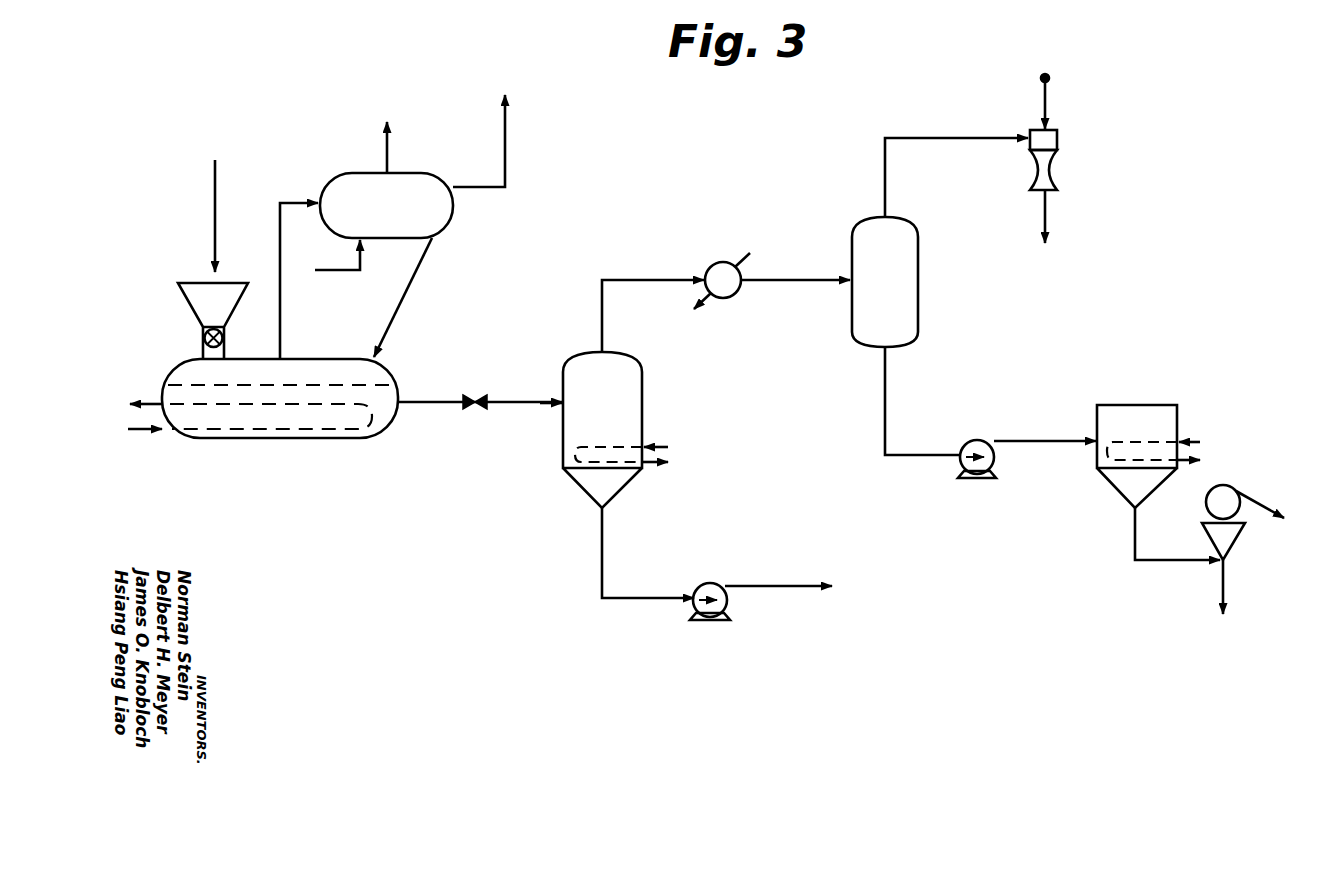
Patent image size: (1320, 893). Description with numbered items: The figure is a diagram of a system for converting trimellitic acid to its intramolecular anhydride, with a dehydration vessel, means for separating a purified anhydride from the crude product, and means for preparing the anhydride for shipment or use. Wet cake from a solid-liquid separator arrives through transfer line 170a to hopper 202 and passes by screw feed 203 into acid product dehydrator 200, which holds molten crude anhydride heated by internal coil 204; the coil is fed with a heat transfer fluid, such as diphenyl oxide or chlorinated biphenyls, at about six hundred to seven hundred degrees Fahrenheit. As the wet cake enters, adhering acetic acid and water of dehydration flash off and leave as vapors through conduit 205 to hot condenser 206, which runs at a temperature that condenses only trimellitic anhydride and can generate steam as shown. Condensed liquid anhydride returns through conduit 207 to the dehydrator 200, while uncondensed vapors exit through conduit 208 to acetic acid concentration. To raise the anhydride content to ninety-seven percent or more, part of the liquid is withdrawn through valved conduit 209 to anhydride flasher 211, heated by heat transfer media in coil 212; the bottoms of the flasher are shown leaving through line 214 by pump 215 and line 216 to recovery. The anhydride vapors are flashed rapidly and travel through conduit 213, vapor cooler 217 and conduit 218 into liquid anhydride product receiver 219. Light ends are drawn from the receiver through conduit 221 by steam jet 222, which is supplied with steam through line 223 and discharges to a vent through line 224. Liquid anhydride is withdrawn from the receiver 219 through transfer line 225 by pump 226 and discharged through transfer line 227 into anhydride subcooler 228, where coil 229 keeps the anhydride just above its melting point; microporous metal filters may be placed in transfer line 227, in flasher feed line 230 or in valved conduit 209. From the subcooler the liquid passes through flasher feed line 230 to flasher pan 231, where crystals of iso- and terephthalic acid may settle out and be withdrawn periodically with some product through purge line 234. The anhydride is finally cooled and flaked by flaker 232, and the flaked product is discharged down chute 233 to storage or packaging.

The transfer line 170a is at (210, 214).
The acid product dehydrator 200 is at (245, 438).
The hopper 202 is at (180, 295).
The screw feed 203 is at (203, 338).
The internal coil 204 is at (192, 398).
The conduit 205 is at (280, 318).
The hot condenser 206 is at (408, 219).
The conduit 207 is at (408, 301).
The conduit 208 is at (510, 155).
The valved conduit 209 is at (422, 400).
The anhydride flasher 211 is at (620, 403).
The coil 212 is at (612, 442).
The conduit 213 is at (629, 278).
The bottoms line 214 is at (605, 545).
The pump 215 is at (727, 605).
The recovery line 216 is at (758, 585).
The vapor cooler 217 is at (718, 262).
The conduit 218 is at (790, 278).
The liquid anhydride product receiver 219 is at (905, 262).
The conduit 221 is at (926, 137).
The steam jet 222 is at (1060, 143).
The steam line 223 is at (1046, 103).
The vent line 224 is at (1046, 212).
The transfer line 225 is at (886, 390).
The pump 226 is at (956, 485).
The transfer line 227 is at (1020, 440).
The anhydride subcooler 228 is at (1133, 405).
The coil 229 is at (1150, 440).
The flasher feed line 230 is at (1130, 528).
The flasher pan 231 is at (1238, 545).
The flaker 232 is at (1206, 502).
The chute 233 is at (1261, 495).
The purge line 234 is at (1220, 585).